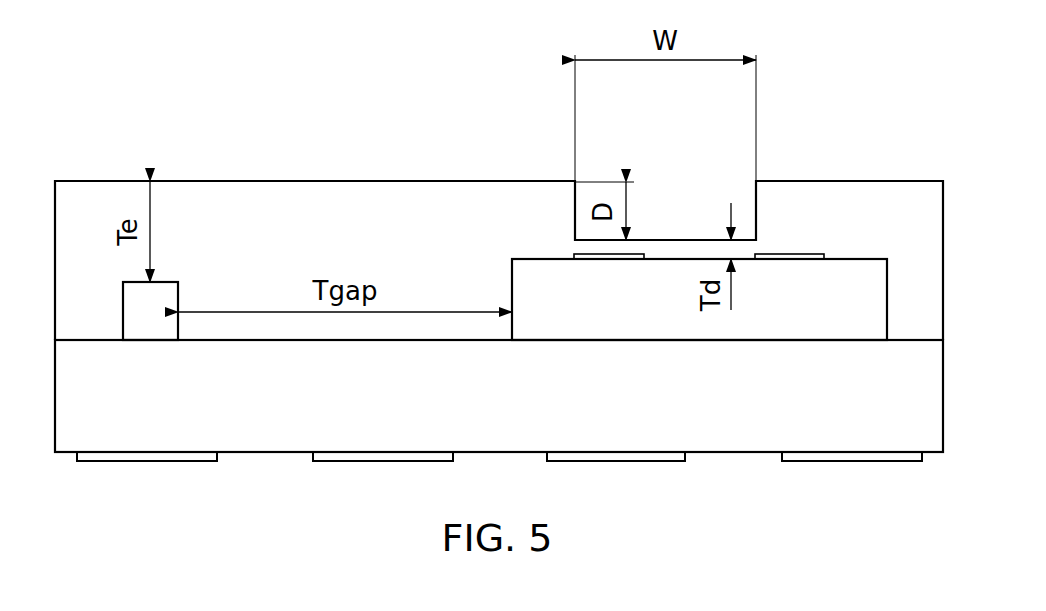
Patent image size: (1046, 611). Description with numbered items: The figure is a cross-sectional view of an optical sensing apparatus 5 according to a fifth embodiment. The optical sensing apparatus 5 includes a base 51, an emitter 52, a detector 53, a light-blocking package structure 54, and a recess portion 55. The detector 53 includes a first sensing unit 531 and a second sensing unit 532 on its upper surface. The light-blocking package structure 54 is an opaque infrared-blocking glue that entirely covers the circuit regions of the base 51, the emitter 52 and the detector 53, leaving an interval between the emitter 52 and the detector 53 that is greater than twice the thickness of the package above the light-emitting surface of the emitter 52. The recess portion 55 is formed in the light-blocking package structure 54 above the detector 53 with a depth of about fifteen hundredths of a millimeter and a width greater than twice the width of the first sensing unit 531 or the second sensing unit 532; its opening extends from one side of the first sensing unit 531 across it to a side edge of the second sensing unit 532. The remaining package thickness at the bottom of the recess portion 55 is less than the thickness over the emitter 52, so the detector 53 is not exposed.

The optical sensing apparatus 5 is at (479, 140).
The base 51 is at (742, 428).
The emitter 52 is at (128, 304).
The detector 53 is at (543, 280).
The first sensing unit 531 is at (608, 262).
The second sensing unit 532 is at (789, 252).
The light-blocking package structure 54 is at (904, 200).
The recess portion 55 is at (683, 188).